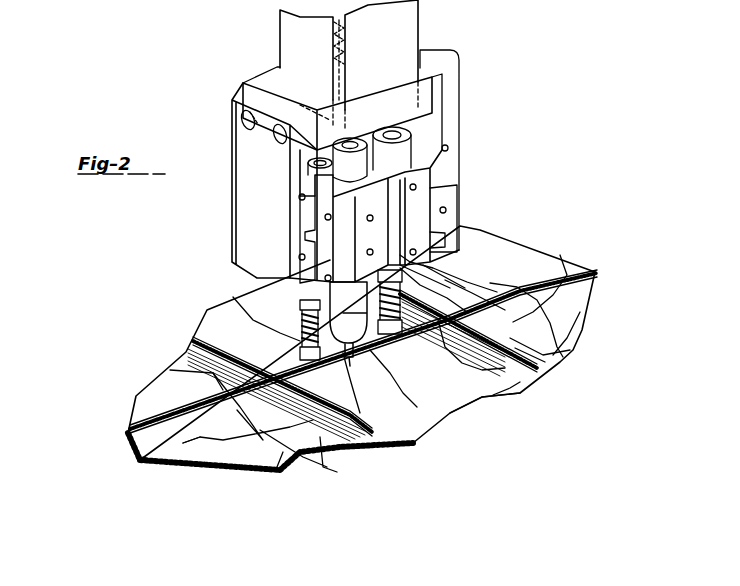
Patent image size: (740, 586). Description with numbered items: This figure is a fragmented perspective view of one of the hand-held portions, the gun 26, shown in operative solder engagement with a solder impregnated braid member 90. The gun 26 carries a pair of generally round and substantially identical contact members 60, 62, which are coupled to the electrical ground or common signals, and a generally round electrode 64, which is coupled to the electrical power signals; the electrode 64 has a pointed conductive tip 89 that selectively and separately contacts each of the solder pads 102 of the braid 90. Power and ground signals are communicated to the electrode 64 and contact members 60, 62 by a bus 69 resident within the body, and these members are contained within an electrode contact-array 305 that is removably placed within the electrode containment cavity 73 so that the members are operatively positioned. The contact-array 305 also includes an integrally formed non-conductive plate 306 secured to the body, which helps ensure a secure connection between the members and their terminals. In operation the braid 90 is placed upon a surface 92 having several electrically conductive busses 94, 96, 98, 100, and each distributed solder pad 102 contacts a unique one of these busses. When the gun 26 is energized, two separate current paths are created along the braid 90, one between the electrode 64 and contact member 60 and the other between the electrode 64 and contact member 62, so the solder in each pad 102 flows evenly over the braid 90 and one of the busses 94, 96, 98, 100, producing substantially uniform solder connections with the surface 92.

The gun 26 is at (436, 29).
The contact member 60 is at (245, 300).
The contact member 62 is at (440, 308).
The electrode 64 is at (407, 445).
The bus 69 is at (330, 72).
The electrode containment cavity 73 is at (420, 123).
The pointed conductive tip 89 is at (360, 413).
The solder impregnated braid member 90 is at (120, 422).
The surface 92 is at (477, 237).
The electrically conductive bus 94 is at (557, 360).
The electrically conductive bus 96 is at (453, 407).
The electrically conductive bus 98 is at (183, 445).
The electrically conductive bus 100 is at (277, 467).
The solder pad 102 is at (143, 457).
The electrode contact-array 305 is at (300, 212).
The non-conductive plate 306 is at (440, 185).